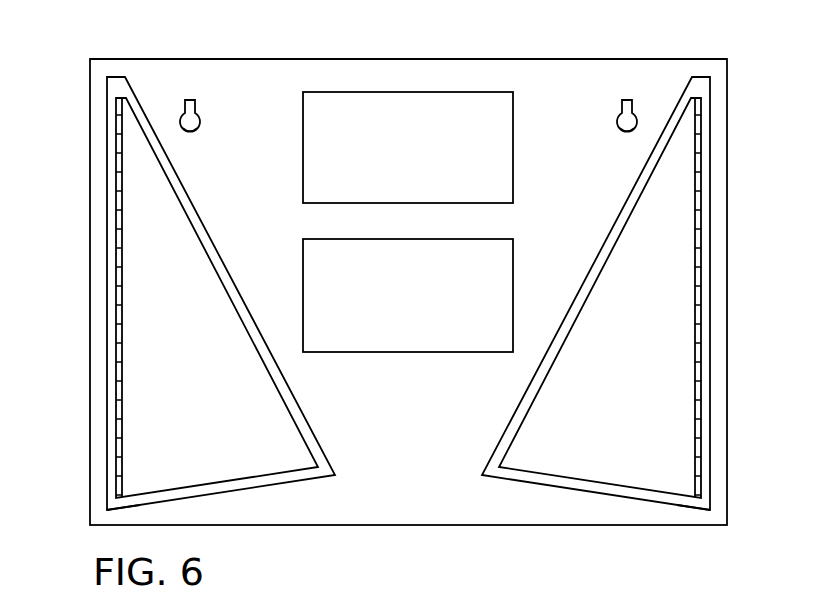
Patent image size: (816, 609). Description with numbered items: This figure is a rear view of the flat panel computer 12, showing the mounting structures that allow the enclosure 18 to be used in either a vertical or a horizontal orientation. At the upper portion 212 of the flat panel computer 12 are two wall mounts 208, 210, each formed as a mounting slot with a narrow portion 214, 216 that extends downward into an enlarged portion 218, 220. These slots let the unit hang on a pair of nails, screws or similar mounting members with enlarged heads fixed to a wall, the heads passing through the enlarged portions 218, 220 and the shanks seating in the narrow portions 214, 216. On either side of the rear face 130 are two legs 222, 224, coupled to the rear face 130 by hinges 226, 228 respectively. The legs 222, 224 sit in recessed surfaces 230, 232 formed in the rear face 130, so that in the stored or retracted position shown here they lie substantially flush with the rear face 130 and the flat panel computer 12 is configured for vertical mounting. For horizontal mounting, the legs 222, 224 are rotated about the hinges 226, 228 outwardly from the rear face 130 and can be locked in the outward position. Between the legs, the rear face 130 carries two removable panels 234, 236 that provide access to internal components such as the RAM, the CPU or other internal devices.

The flat panel computer 12 is at (375, 272).
The enclosure 18 is at (572, 58).
The rear face 130 is at (150, 73).
The upper portion 212 is at (326, 59).
The narrow portion 214 is at (199, 100).
The narrow portion 216 is at (628, 100).
The wall mount 208 is at (223, 102).
The wall mount 210 is at (602, 83).
The enlarged portion 218 is at (203, 130).
The enlarged portion 220 is at (617, 126).
The leg 222 is at (180, 320).
The leg 224 is at (633, 326).
The hinge 226 is at (117, 305).
The hinge 228 is at (703, 272).
The recessed surface 230 is at (112, 515).
The recessed surface 232 is at (700, 513).
The panel 234 is at (390, 158).
The panel 236 is at (390, 310).